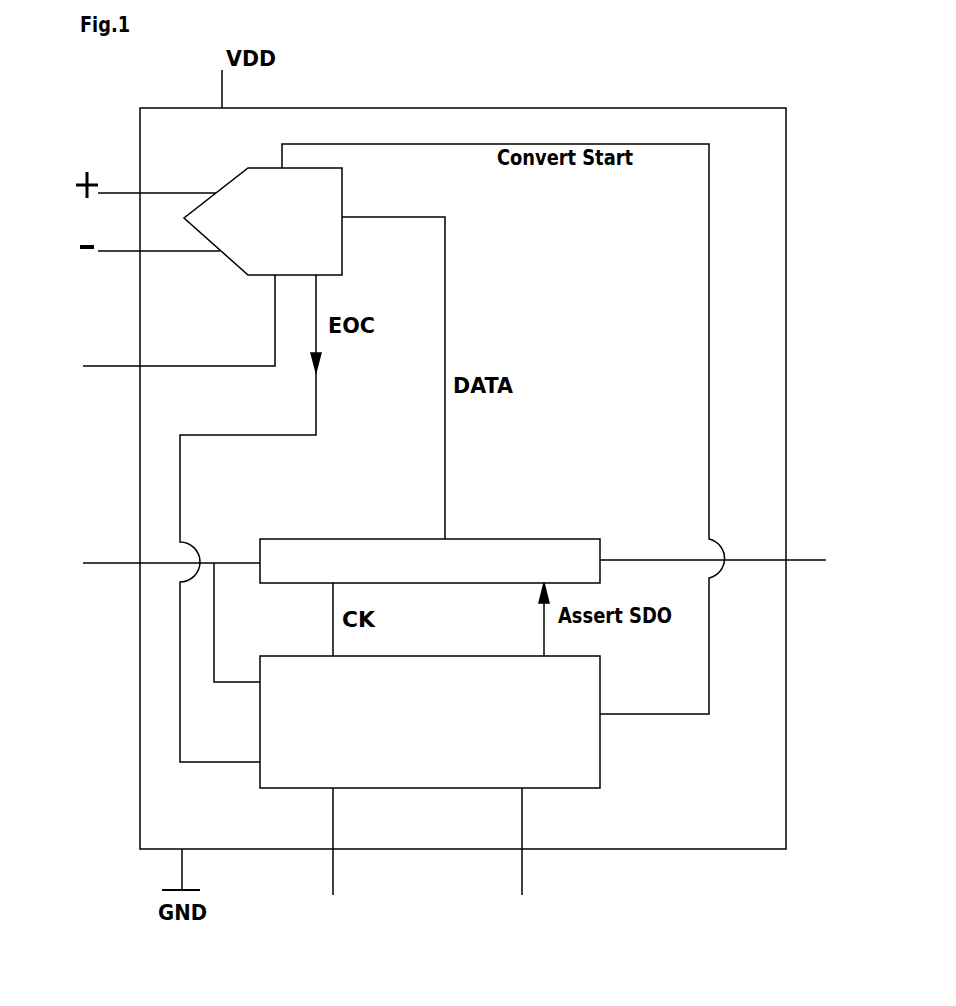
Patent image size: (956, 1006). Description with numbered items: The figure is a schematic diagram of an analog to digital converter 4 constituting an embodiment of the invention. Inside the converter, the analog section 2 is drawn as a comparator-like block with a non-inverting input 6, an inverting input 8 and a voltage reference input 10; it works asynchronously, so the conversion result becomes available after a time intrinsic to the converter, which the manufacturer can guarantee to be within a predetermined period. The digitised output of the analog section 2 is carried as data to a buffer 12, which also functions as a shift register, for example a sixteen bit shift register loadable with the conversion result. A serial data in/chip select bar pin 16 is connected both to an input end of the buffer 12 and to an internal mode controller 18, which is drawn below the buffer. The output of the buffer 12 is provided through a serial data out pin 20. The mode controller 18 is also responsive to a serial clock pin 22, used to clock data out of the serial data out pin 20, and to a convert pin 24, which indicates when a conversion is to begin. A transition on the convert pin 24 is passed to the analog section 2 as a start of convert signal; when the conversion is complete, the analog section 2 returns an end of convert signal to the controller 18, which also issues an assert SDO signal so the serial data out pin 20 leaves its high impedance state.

The analog section 2 is at (253, 162).
The analog to digital converter 4 is at (709, 108).
The non-inverting input 6 is at (76, 180).
The inverting input 8 is at (76, 258).
The voltage reference input 10 is at (160, 351).
The buffer 12 is at (303, 540).
The serial data in/chip select bar pin 16 is at (148, 622).
The mode controller 18 is at (600, 769).
The serial data out pin 20 is at (733, 590).
The serial clock pin 22 is at (335, 872).
The convert pin 24 is at (524, 871).